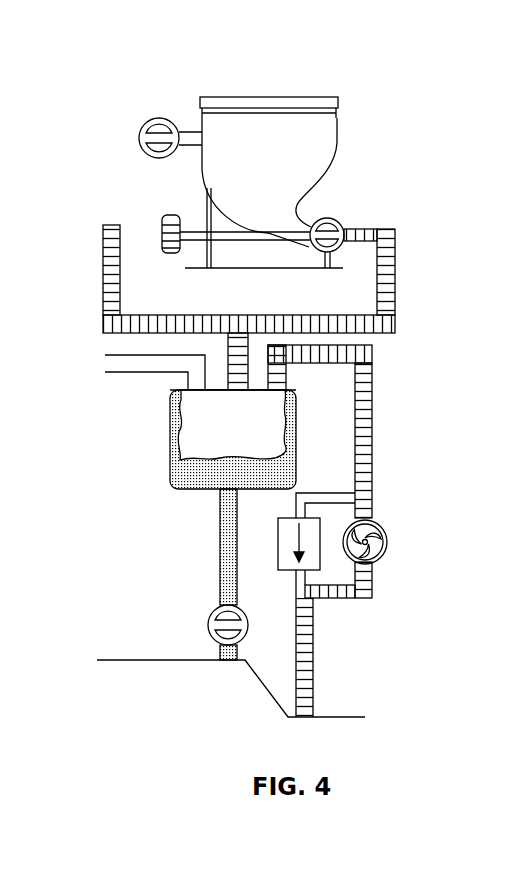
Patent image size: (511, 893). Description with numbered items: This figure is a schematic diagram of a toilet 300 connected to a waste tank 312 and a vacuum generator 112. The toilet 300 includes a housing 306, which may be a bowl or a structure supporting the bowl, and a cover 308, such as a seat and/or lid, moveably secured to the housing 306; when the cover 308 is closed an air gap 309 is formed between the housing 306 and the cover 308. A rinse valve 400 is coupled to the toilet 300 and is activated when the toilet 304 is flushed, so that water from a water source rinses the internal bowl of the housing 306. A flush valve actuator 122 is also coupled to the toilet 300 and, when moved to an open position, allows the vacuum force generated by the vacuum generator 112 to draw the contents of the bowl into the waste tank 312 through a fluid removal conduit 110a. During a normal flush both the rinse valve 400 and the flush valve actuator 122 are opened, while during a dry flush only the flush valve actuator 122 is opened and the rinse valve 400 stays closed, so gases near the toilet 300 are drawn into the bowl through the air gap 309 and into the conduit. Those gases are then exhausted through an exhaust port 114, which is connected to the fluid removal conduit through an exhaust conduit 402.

The toilet 304 is at (402, 30).
The toilet 300 is at (242, 78).
The cover 308 is at (284, 97).
The air gap 309 is at (340, 113).
The housing 306 is at (336, 143).
The rinse valve 400 is at (161, 103).
The flush valve actuator 122 is at (331, 211).
The fluid removal conduit 110a is at (396, 266).
The waste tank 312 is at (170, 406).
The exhaust conduit 402 is at (373, 428).
The vacuum generator 112 is at (377, 521).
The exhaust port 114 is at (310, 710).